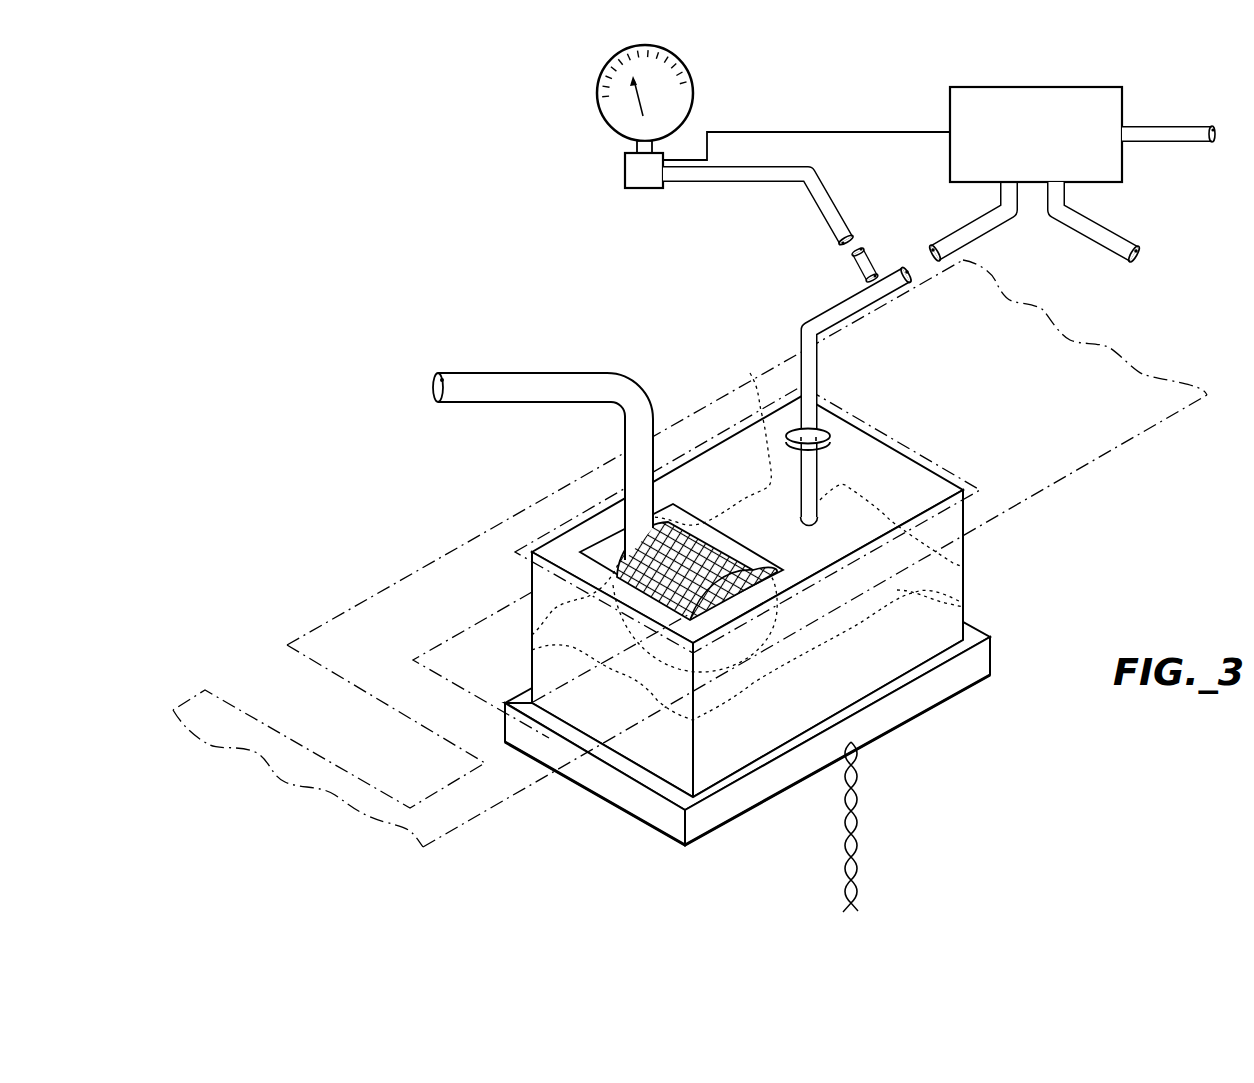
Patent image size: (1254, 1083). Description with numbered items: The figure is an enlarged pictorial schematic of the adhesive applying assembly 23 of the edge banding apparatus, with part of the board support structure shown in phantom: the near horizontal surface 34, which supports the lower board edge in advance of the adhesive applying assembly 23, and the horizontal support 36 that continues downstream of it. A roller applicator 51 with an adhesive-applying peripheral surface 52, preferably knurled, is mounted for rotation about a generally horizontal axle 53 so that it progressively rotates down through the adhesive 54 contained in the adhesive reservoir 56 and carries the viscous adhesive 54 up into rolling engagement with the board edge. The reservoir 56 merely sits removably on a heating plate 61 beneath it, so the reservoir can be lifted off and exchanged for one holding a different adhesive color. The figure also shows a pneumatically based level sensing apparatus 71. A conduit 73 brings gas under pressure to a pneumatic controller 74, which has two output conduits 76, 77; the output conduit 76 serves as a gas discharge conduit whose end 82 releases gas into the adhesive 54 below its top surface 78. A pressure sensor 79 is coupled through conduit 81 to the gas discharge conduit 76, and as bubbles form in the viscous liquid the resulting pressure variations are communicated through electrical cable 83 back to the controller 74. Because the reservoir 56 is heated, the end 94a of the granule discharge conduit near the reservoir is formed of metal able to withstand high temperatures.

The adhesive applying assembly 23 is at (746, 654).
The near horizontal surface 34 is at (1137, 433).
The horizontal support 36 is at (487, 797).
The roller applicator 51 is at (742, 583).
The adhesive-applying peripheral surface 52 is at (676, 531).
The horizontal axle 53 is at (760, 689).
The adhesive 54 is at (532, 651).
The adhesive reservoir 56 is at (878, 658).
The heating plate 61 is at (720, 815).
The level sensing apparatus 71 is at (828, 278).
The conduit 73 is at (1157, 125).
The pneumatic controller 74 is at (1058, 87).
The output conduit 76 is at (902, 290).
The output conduit 77 is at (1113, 232).
The top surface 78 is at (750, 373).
The pressure sensor 79 is at (597, 90).
The conduit 81 is at (874, 248).
The end 82 is at (808, 528).
The electrical cable 83 is at (778, 131).
The end of conduit 94a is at (508, 372).